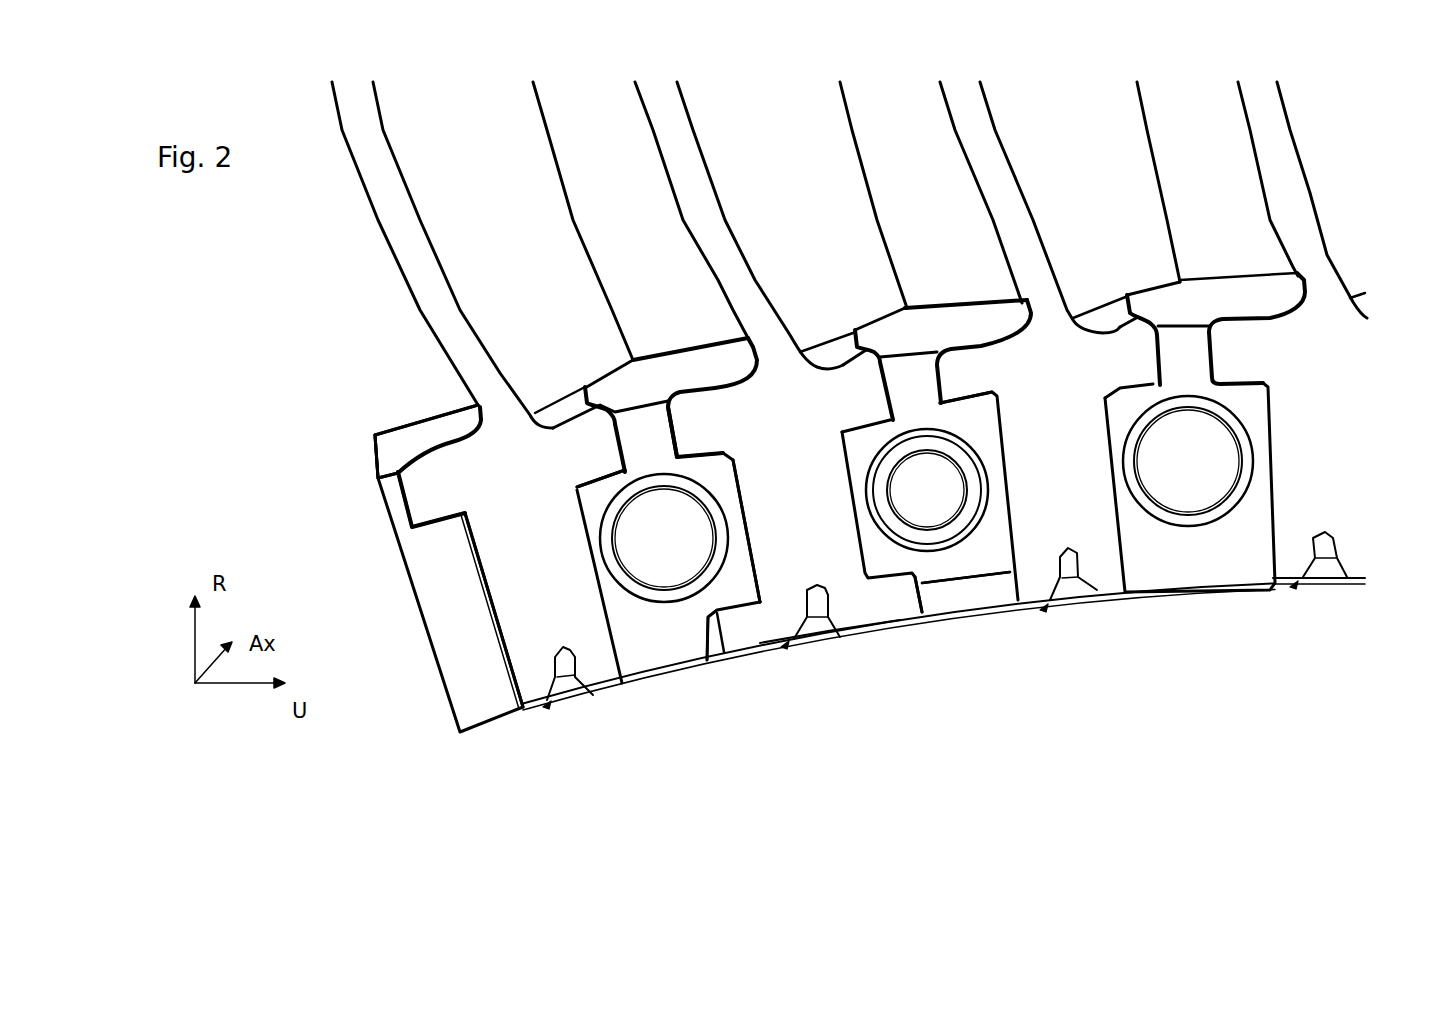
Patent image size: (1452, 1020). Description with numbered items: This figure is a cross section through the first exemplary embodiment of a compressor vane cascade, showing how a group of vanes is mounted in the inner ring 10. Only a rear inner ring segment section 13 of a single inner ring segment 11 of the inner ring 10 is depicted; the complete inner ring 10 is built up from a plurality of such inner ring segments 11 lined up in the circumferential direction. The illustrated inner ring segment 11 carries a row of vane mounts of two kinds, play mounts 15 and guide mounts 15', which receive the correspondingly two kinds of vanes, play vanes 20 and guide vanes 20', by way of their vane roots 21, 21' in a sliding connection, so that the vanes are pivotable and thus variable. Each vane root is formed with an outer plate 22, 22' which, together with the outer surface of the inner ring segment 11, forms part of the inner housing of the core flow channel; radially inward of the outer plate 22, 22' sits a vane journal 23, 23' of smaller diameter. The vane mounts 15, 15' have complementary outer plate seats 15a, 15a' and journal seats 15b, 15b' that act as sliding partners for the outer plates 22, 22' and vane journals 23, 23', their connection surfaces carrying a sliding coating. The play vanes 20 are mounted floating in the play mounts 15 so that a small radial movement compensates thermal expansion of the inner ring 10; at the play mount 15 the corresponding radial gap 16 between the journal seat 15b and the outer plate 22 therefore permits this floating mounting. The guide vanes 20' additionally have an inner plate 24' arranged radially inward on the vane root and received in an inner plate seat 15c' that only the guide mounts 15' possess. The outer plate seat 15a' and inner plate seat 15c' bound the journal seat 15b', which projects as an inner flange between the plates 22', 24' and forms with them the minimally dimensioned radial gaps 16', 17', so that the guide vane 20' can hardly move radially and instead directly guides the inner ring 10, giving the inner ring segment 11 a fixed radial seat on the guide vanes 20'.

The inner ring 10 is at (302, 388).
The inner ring segment 11 is at (383, 462).
The rear inner ring segment section 13 is at (390, 441).
The play mount 15 is at (944, 663).
The guide mount 15' is at (830, 682).
The outer plate seat 15a is at (902, 380).
The outer plate seat 15a' is at (906, 367).
The journal seat 15b is at (702, 610).
The journal seat 15b' is at (768, 501).
The inner plate seat 15c' is at (683, 663).
The hook 16 is at (687, 448).
The radial gap 16' is at (699, 432).
The radial gap 17' is at (754, 600).
The play vane 20 is at (872, 255).
The guide vane 20' is at (739, 210).
The vane root 21 is at (909, 681).
The vane root 21' is at (769, 683).
The outer plate 22 is at (842, 376).
The outer plate 22' is at (709, 391).
The vane journal 23 is at (825, 557).
The vane journal 23' is at (677, 568).
The inner plate 24' is at (688, 640).